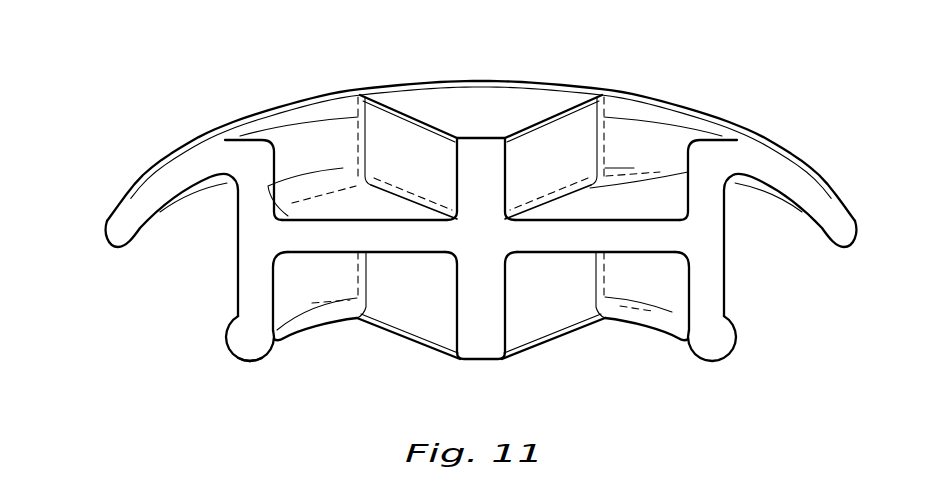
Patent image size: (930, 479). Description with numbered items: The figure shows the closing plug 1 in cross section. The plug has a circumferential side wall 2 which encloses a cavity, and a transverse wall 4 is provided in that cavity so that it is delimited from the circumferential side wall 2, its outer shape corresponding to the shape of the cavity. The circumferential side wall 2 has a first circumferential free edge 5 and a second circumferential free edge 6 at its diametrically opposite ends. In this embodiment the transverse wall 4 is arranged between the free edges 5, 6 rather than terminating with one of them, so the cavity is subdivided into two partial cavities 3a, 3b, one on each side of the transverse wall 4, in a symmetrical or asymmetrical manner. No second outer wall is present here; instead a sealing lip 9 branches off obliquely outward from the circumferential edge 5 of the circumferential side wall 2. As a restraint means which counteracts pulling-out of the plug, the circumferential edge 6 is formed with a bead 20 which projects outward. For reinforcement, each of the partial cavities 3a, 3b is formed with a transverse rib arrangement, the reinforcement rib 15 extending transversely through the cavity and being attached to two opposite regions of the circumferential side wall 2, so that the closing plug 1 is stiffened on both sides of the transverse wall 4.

The closing plug 1 is at (143, 137).
The circumferential side wall 2 is at (263, 190).
The partial cavity 3a is at (641, 333).
The partial cavity 3b is at (637, 172).
The transverse wall 4 is at (357, 234).
The first circumferential free edge 5 is at (238, 138).
The second circumferential free edge 6 is at (245, 361).
The sealing lip 9 is at (826, 206).
The reinforcement rib 15 is at (403, 160).
The bead 20 is at (224, 333).